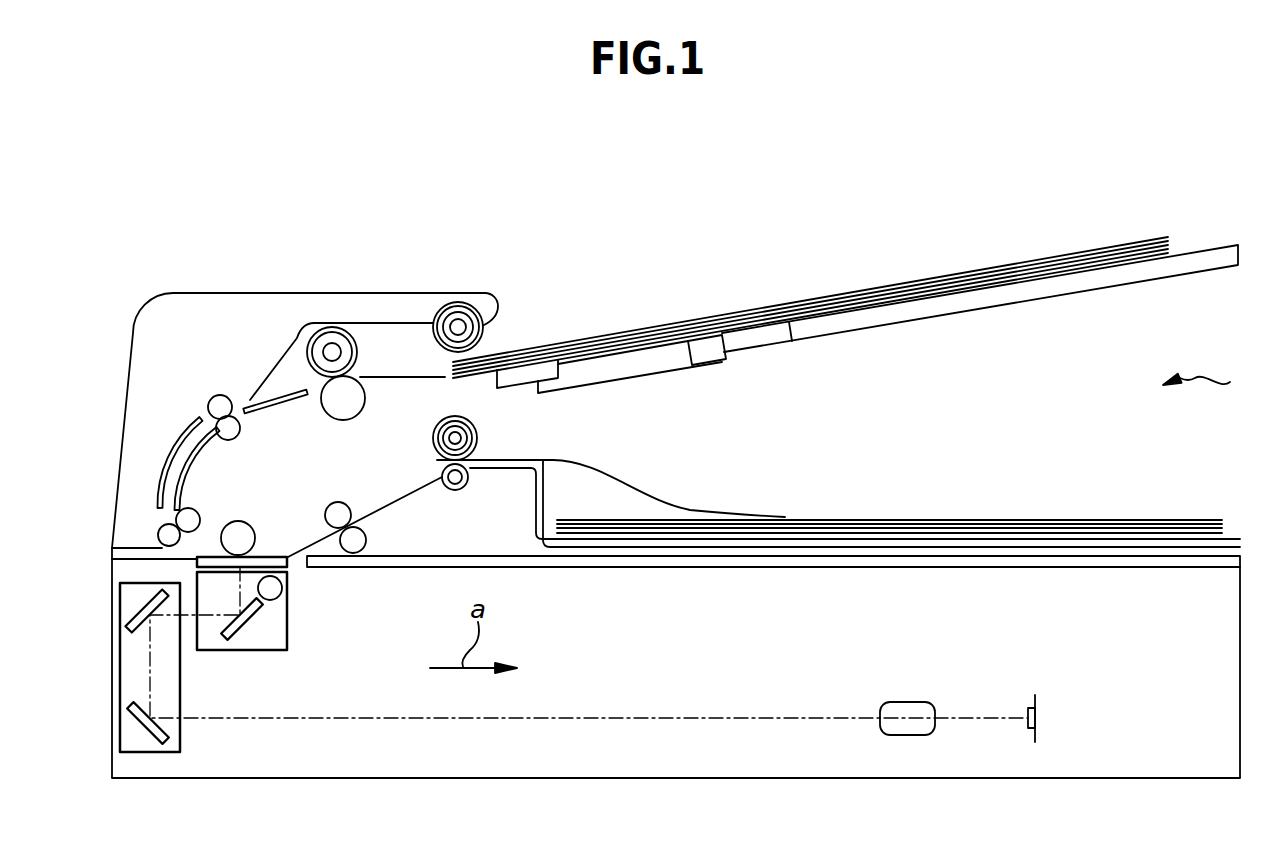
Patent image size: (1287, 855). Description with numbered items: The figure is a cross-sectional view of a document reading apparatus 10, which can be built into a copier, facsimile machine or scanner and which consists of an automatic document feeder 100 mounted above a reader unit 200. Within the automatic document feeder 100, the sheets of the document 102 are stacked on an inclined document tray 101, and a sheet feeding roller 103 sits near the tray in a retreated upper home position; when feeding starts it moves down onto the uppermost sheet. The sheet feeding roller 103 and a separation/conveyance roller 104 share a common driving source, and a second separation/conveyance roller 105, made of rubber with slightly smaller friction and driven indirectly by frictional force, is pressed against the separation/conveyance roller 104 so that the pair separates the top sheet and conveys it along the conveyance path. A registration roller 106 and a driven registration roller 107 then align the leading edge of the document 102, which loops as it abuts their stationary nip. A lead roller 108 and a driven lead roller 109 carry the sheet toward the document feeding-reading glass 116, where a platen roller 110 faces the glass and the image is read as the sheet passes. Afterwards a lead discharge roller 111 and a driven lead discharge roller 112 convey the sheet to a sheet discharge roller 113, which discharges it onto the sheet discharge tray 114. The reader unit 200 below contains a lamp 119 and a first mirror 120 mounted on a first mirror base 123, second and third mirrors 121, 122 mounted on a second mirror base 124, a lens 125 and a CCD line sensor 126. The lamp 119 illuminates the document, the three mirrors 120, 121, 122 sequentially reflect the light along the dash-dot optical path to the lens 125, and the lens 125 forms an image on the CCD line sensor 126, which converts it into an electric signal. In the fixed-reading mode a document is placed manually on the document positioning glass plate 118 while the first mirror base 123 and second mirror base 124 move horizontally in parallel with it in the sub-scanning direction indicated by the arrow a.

The document reading apparatus 10 is at (1216, 380).
The automatic document feeder 100 is at (443, 292).
The document tray 101 is at (968, 302).
The document 102 is at (848, 292).
The sheet feeding roller 103 is at (463, 302).
The separation/conveyance roller 104 is at (328, 327).
The separation/conveyance roller 105 is at (363, 397).
The registration roller 106 is at (243, 412).
The driven registration roller 107 is at (212, 397).
The lead roller 108 is at (176, 520).
The driven lead roller 109 is at (158, 536).
The platen roller 110 is at (238, 520).
The lead discharge roller 111 is at (330, 503).
The driven lead discharge roller 112 is at (366, 538).
The sheet discharge roller 113 is at (477, 425).
The sheet discharge tray 114 is at (858, 517).
The document feeding-reading glass 116 is at (195, 563).
The document positioning glass plate 118 is at (637, 568).
The lamp 119 is at (285, 605).
The mirror 120 is at (258, 617).
The mirror 121 is at (137, 613).
The mirror 122 is at (145, 727).
The first mirror base 123 is at (285, 642).
The second mirror base 124 is at (162, 752).
The lens 125 is at (903, 700).
The CCD line sensor 126 is at (1035, 700).
The reader unit 200 is at (878, 778).